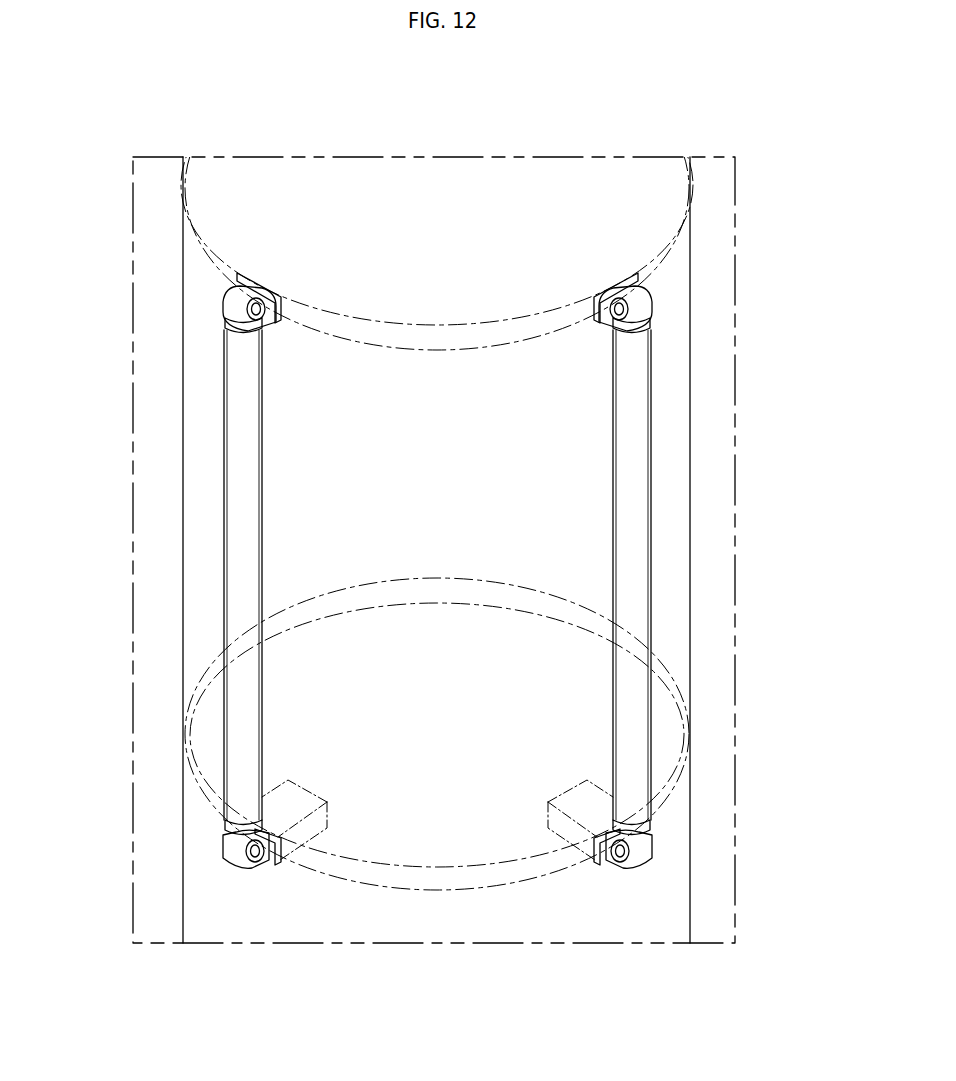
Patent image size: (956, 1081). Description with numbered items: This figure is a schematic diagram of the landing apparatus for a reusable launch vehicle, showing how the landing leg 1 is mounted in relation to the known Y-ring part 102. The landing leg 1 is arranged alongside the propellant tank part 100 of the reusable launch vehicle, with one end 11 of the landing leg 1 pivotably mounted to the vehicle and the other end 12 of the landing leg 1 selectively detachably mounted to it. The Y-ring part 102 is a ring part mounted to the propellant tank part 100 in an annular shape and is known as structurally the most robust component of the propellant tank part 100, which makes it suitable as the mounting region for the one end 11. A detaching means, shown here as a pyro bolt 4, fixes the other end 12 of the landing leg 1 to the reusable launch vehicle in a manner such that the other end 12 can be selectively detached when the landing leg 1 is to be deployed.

The landing leg 1 is at (213, 535).
The pyro bolt 4 is at (553, 828).
The one end of the landing leg 11 is at (226, 305).
The other end of the landing leg 12 is at (228, 852).
The propellant tank part 100 is at (668, 507).
The Y-ring part 102 is at (665, 263).